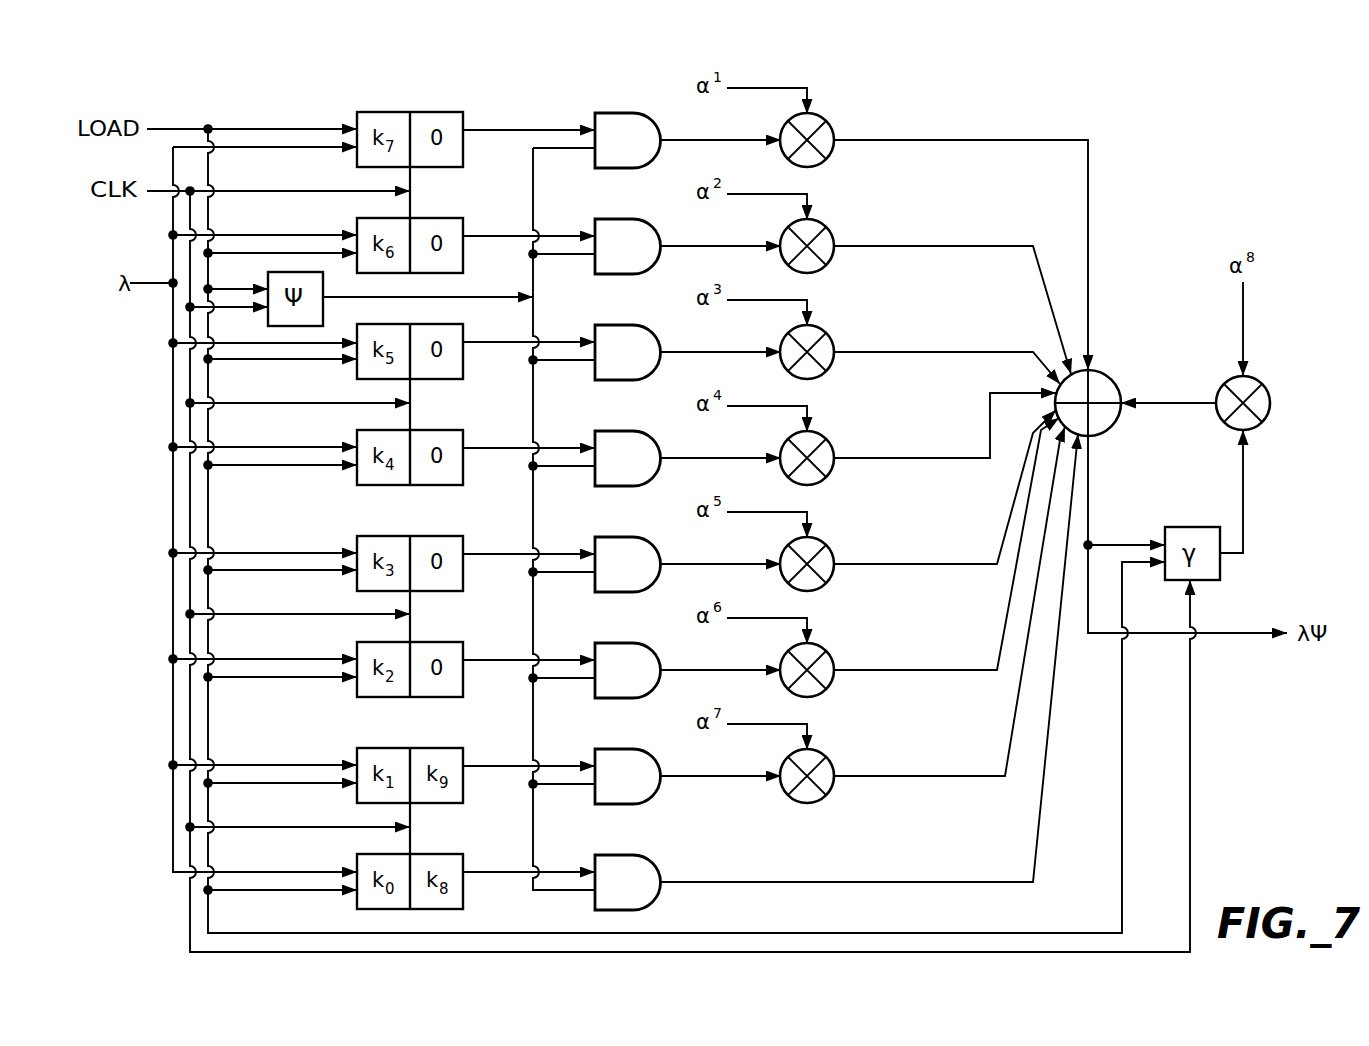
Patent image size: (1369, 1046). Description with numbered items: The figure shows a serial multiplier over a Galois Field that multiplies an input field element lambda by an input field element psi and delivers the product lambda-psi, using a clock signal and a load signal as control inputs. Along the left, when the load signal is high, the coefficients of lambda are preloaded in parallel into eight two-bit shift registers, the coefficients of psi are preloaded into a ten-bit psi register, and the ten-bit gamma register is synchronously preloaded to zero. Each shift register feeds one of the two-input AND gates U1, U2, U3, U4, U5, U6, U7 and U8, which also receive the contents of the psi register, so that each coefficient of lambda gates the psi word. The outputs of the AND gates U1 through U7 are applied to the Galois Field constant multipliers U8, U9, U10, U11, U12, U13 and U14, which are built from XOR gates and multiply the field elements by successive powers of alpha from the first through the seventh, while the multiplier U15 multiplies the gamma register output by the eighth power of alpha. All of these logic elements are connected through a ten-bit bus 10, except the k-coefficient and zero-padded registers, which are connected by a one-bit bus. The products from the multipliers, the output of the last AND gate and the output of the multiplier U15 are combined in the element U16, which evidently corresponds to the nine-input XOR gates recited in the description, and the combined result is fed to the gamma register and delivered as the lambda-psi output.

The 10-bit bus 10 is at (465, 305).
The two-input AND gate U1 is at (628, 128).
The two-input AND gate U2 is at (628, 234).
The two-input AND gate U3 is at (628, 340).
The two-input AND gate U4 is at (628, 446).
The two-input AND gate U5 is at (628, 552).
The two-input AND gate U6 is at (628, 658).
The two-input AND gate U7 is at (628, 764).
The two-input AND gate and Galois Field constant multiplier U8 is at (714, 508).
The Galois Field constant multiplier U9 is at (791, 242).
The Galois Field constant multiplier U10 is at (785, 348).
The Galois Field constant multiplier U11 is at (785, 454).
The Galois Field constant multiplier U12 is at (785, 560).
The Galois Field constant multiplier U13 is at (785, 666).
The Galois Field constant multiplier U14 is at (785, 772).
The Galois Field constant multiplier U15 is at (1257, 390).
The summing circuit U16 is at (1098, 391).